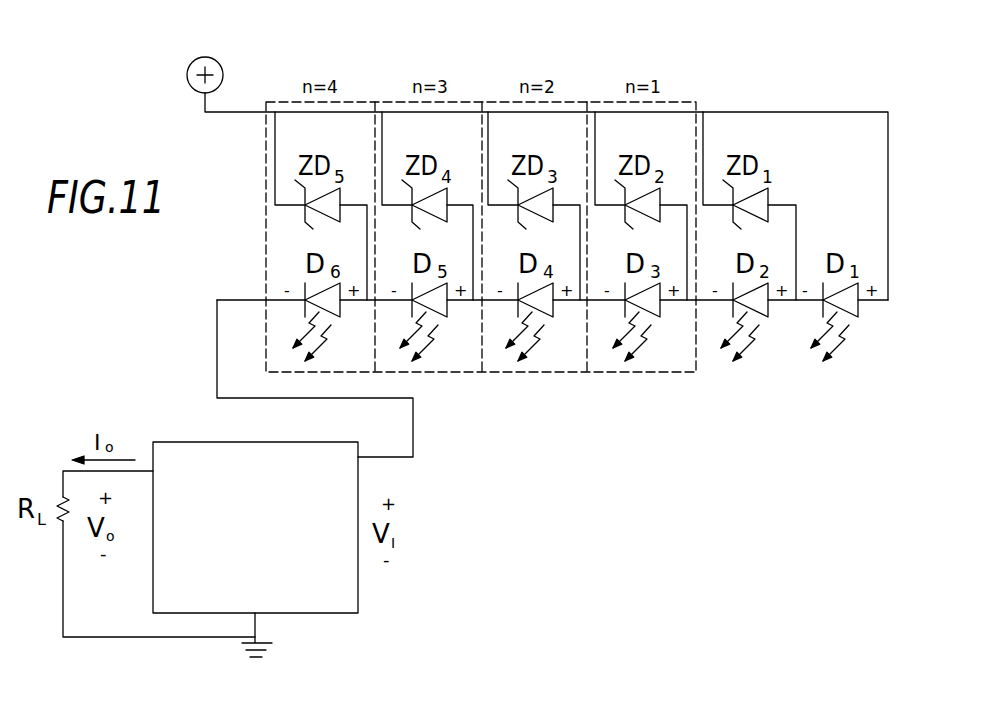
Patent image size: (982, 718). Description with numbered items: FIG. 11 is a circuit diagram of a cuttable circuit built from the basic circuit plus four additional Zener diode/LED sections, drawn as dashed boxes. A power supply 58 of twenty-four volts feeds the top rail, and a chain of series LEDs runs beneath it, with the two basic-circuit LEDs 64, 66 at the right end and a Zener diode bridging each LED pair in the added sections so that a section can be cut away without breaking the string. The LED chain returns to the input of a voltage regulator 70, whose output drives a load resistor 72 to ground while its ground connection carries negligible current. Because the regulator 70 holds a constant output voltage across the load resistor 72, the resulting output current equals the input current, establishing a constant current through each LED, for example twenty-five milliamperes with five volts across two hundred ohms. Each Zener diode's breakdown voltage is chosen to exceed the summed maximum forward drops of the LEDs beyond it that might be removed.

The power supply 58 is at (187, 73).
The light-emitting diode 64 is at (860, 307).
The light-emitting diode 66 is at (770, 307).
The voltage regulator 70 is at (358, 582).
The load resistor 72 is at (63, 500).